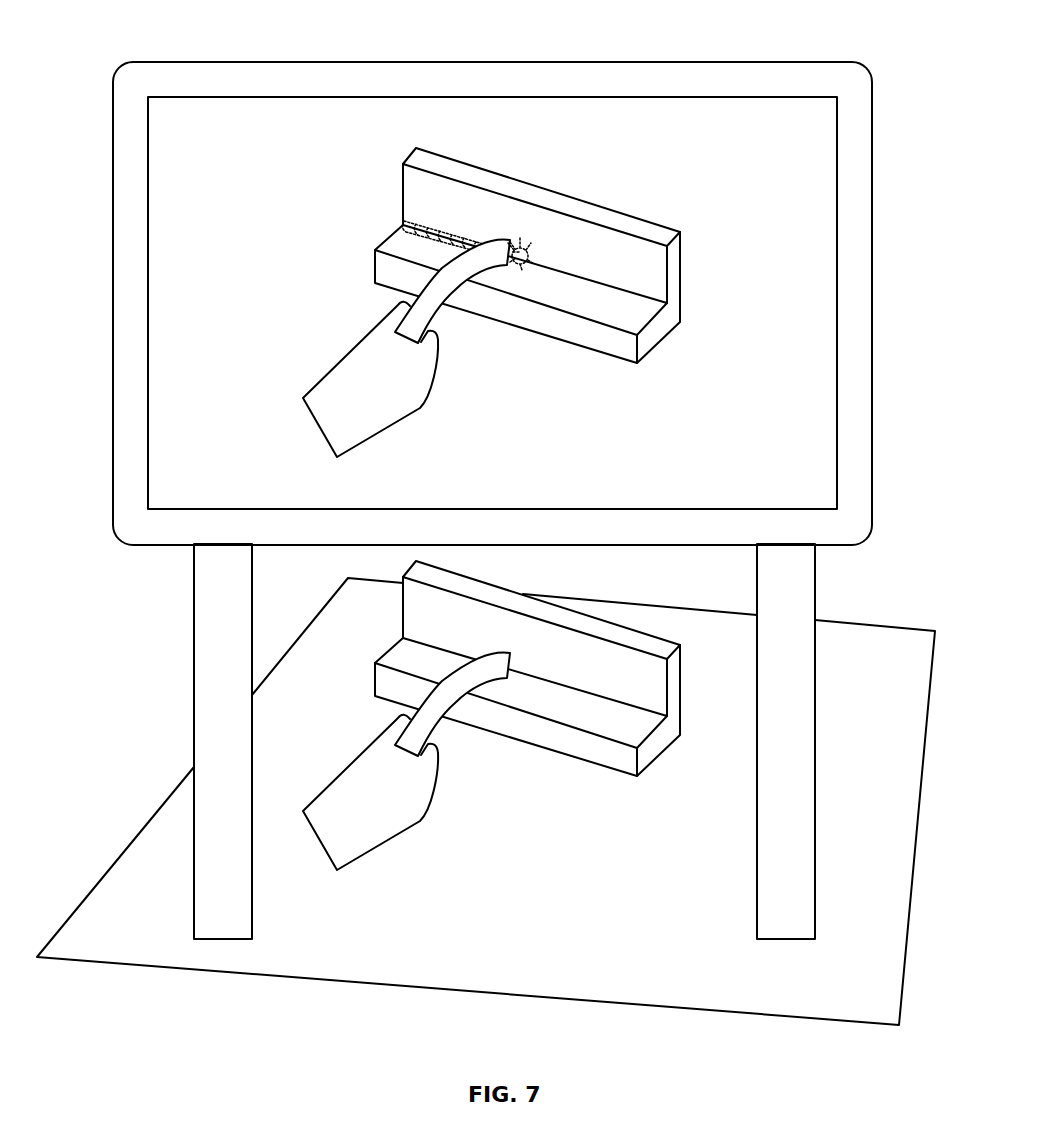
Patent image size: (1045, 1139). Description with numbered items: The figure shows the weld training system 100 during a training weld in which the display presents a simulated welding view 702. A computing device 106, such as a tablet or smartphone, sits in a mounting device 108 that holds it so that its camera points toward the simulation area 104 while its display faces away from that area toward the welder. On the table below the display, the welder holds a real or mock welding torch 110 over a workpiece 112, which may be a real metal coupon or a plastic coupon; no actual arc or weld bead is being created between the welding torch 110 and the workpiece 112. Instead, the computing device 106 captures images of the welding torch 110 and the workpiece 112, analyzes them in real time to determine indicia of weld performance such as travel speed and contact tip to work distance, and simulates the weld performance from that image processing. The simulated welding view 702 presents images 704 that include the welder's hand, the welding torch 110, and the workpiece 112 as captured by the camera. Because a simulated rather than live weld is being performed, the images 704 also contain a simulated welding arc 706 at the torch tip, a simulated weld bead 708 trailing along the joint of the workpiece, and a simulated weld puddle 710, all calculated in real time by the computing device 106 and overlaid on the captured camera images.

The welding system 100 is at (78, 27).
The simulation area 104 is at (885, 614).
The computing device 106 is at (113, 120).
The mounting device 108 is at (252, 820).
The welding torch 110 is at (437, 729).
The workpiece 112 is at (682, 655).
The simulated welding view 702 is at (198, 93).
The images 704 is at (268, 148).
The simulated welding arc 706 is at (525, 251).
The simulated weld bead 708 is at (405, 226).
The simulated weld puddle 710 is at (530, 268).